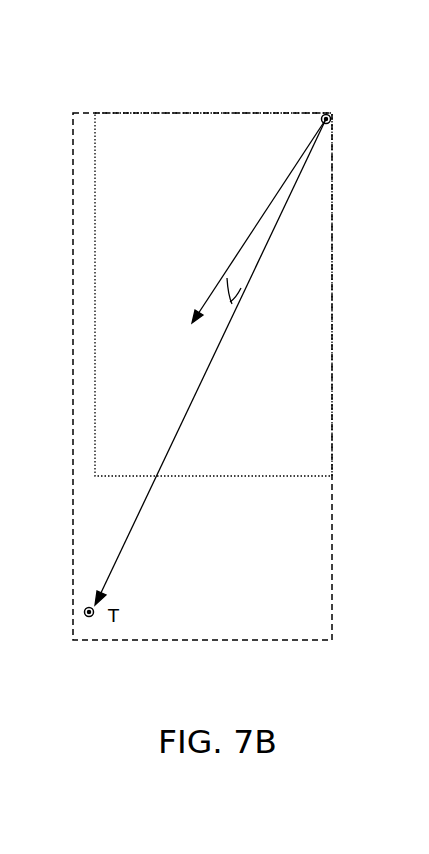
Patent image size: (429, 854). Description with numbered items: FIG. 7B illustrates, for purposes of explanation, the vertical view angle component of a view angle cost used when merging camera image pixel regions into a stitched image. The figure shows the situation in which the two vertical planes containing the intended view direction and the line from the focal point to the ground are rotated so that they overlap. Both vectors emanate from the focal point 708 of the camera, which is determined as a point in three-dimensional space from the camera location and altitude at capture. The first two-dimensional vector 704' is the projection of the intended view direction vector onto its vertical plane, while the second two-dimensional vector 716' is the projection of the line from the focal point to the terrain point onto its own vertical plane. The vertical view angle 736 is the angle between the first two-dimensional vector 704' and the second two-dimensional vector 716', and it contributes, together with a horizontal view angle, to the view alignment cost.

The focal point 708 is at (333, 105).
The two-dimensional vector V2d 704' is at (242, 221).
The two-dimensional vector FT2d 716' is at (210, 362).
The vertical view angle 736 is at (232, 306).